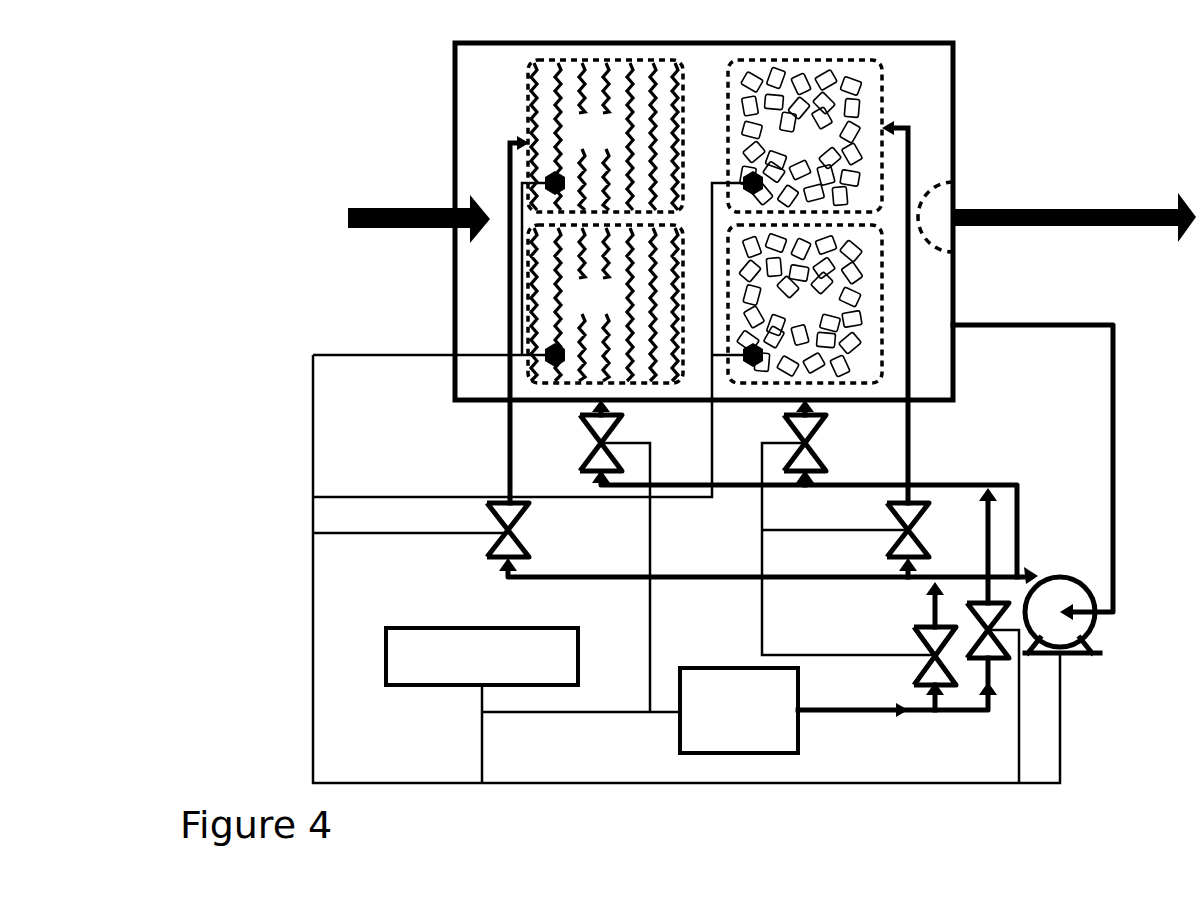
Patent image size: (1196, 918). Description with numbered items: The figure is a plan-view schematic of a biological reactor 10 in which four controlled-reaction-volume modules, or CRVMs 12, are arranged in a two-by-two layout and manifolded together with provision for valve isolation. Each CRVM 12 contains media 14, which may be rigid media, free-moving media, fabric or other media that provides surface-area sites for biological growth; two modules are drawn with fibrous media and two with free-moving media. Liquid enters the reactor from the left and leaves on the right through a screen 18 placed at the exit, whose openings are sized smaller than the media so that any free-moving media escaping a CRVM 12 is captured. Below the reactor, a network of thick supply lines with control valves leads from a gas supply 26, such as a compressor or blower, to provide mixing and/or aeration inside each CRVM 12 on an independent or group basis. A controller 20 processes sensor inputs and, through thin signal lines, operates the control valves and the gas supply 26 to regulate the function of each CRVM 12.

The biological reactor 10 is at (1012, 136).
The controlled-reaction-volume module (CRVM) 12 is at (503, 97).
The media 14 is at (614, 150).
The screen 18 is at (962, 249).
The controller 20 is at (500, 674).
The gas supply 26 is at (758, 723).